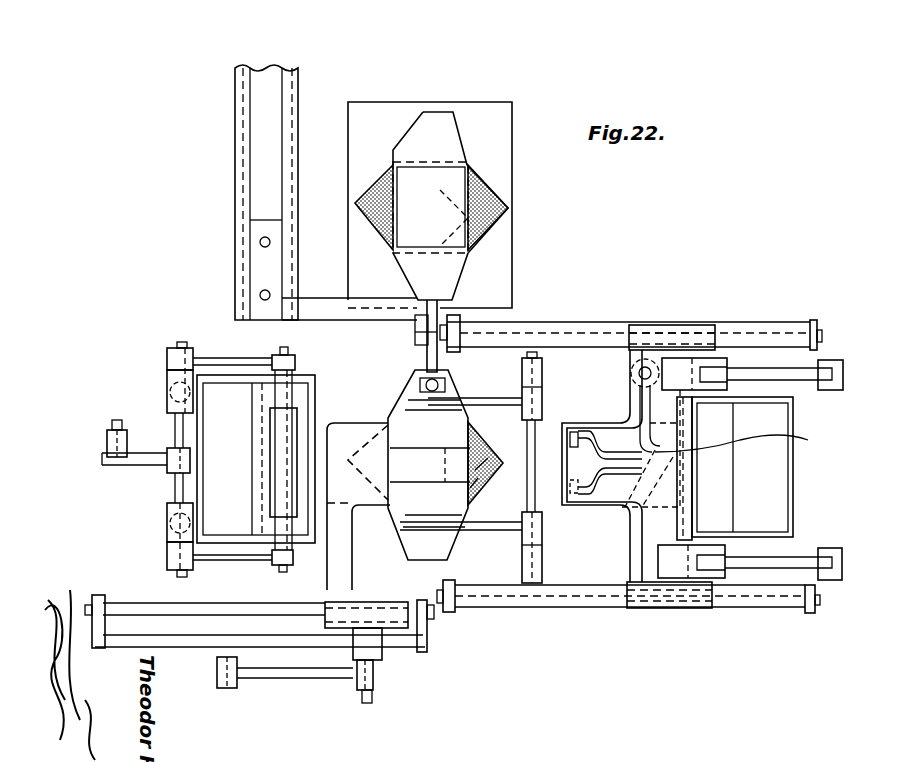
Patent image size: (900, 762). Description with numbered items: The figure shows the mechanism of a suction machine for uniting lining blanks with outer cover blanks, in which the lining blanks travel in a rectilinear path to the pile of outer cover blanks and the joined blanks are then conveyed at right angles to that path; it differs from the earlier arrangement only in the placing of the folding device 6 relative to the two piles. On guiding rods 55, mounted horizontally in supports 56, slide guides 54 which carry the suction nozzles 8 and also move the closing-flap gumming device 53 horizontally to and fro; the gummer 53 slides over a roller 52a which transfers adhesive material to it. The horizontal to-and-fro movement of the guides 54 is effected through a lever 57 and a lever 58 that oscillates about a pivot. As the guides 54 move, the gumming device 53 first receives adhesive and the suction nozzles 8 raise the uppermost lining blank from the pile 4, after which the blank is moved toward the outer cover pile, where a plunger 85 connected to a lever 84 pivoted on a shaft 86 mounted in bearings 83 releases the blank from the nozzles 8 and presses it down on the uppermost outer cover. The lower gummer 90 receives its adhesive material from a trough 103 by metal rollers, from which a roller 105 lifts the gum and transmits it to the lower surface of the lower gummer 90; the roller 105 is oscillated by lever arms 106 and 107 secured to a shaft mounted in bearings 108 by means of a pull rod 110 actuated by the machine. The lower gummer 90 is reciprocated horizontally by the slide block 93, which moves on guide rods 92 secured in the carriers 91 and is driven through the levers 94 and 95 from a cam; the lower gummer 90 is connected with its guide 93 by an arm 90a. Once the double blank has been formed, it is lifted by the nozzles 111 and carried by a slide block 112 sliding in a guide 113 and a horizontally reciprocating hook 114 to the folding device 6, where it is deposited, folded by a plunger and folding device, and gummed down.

The pile 4 is at (622, 493).
The folding device 6 is at (458, 195).
The suction nozzles 8 is at (574, 438).
The roller 52a is at (722, 488).
The gumming device 53 is at (800, 438).
The guides 54 is at (685, 335).
The guiding rods 55 is at (582, 333).
The supports 56 is at (455, 330).
The lever 57 is at (800, 380).
The lever 58 is at (843, 374).
The bearings 83 is at (542, 370).
The lever 84 is at (478, 403).
The plunger 85 is at (405, 408).
The shaft 86 is at (528, 445).
The lower gummer 90 is at (483, 478).
The arm 90a is at (352, 488).
The carriers 91 is at (98, 648).
The guide rods 92 is at (105, 612).
The slide block 93 is at (382, 620).
The lever 94 is at (335, 676).
The lever 95 is at (222, 688).
The trough 103 is at (225, 400).
The roller 105 is at (285, 415).
The lever arm 106 is at (212, 350).
The lever arm 107 is at (135, 462).
The bearings 108 is at (172, 392).
The pull rod 110 is at (107, 441).
The nozzles 111 is at (444, 380).
The slide block 112 is at (260, 260).
The guide 113 is at (262, 130).
The hook 114 is at (427, 338).